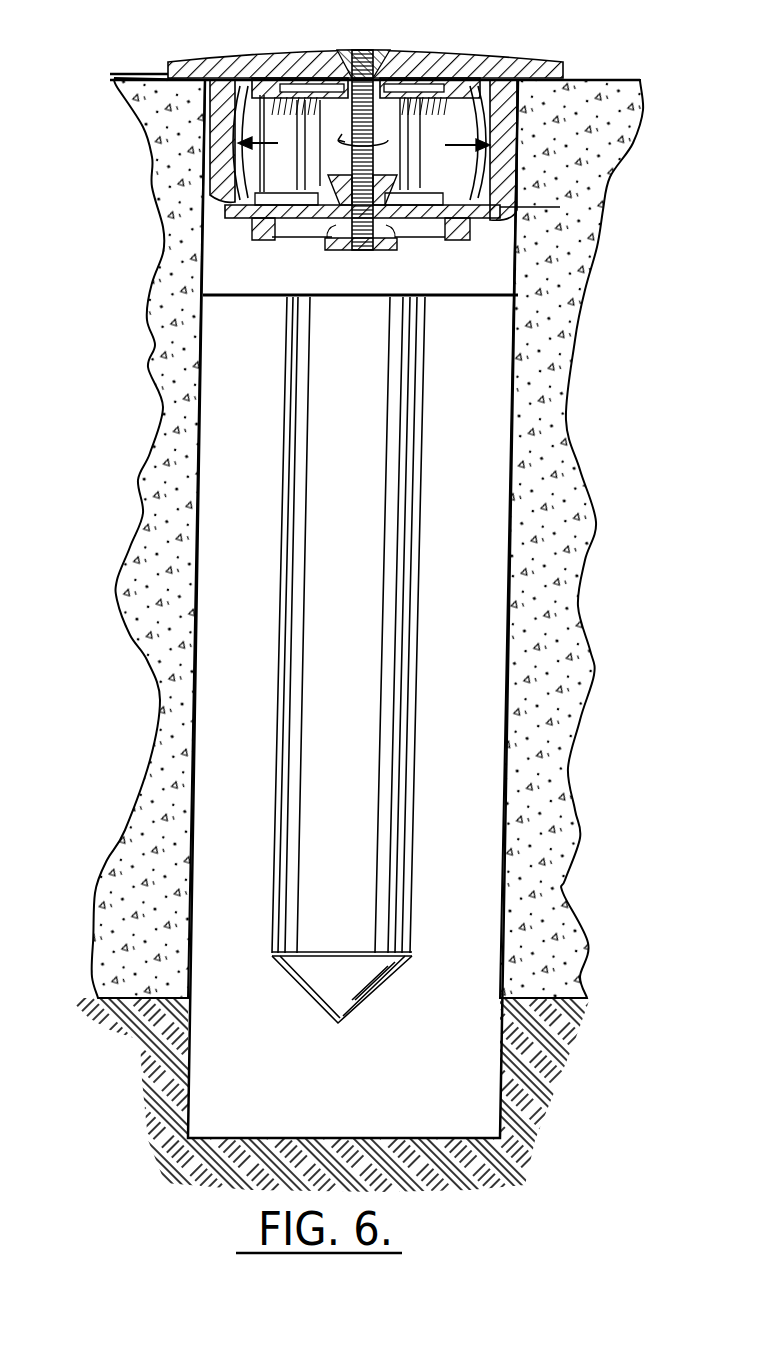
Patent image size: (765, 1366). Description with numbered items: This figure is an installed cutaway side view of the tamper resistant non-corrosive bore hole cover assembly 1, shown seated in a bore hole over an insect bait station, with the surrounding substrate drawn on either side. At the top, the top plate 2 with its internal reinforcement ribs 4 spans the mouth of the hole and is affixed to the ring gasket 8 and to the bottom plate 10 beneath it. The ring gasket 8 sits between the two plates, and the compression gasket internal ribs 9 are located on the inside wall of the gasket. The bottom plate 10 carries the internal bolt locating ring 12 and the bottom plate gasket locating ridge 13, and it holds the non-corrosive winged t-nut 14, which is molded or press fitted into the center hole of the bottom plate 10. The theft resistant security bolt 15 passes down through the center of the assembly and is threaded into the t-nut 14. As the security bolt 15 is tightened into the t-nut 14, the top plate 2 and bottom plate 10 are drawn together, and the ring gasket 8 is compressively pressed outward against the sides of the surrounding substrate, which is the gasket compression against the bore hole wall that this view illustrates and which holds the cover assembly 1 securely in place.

The tamper resistant non-corrosive bore hole cover assembly 1 is at (205, 185).
The top plate 2 is at (553, 78).
The top plate internal reinforcement ribs 4 is at (262, 52).
The ring gasket 8 is at (520, 142).
The compression gasket internal ribs 9 is at (205, 115).
The bottom plate 10 is at (125, 300).
The internal bolt locating ring 12 is at (520, 178).
The bottom plate gasket locating ridge 13 is at (208, 210).
The non-corrosive winged t-nut 14 is at (400, 237).
The theft resistant security bolt 15 is at (382, 50).